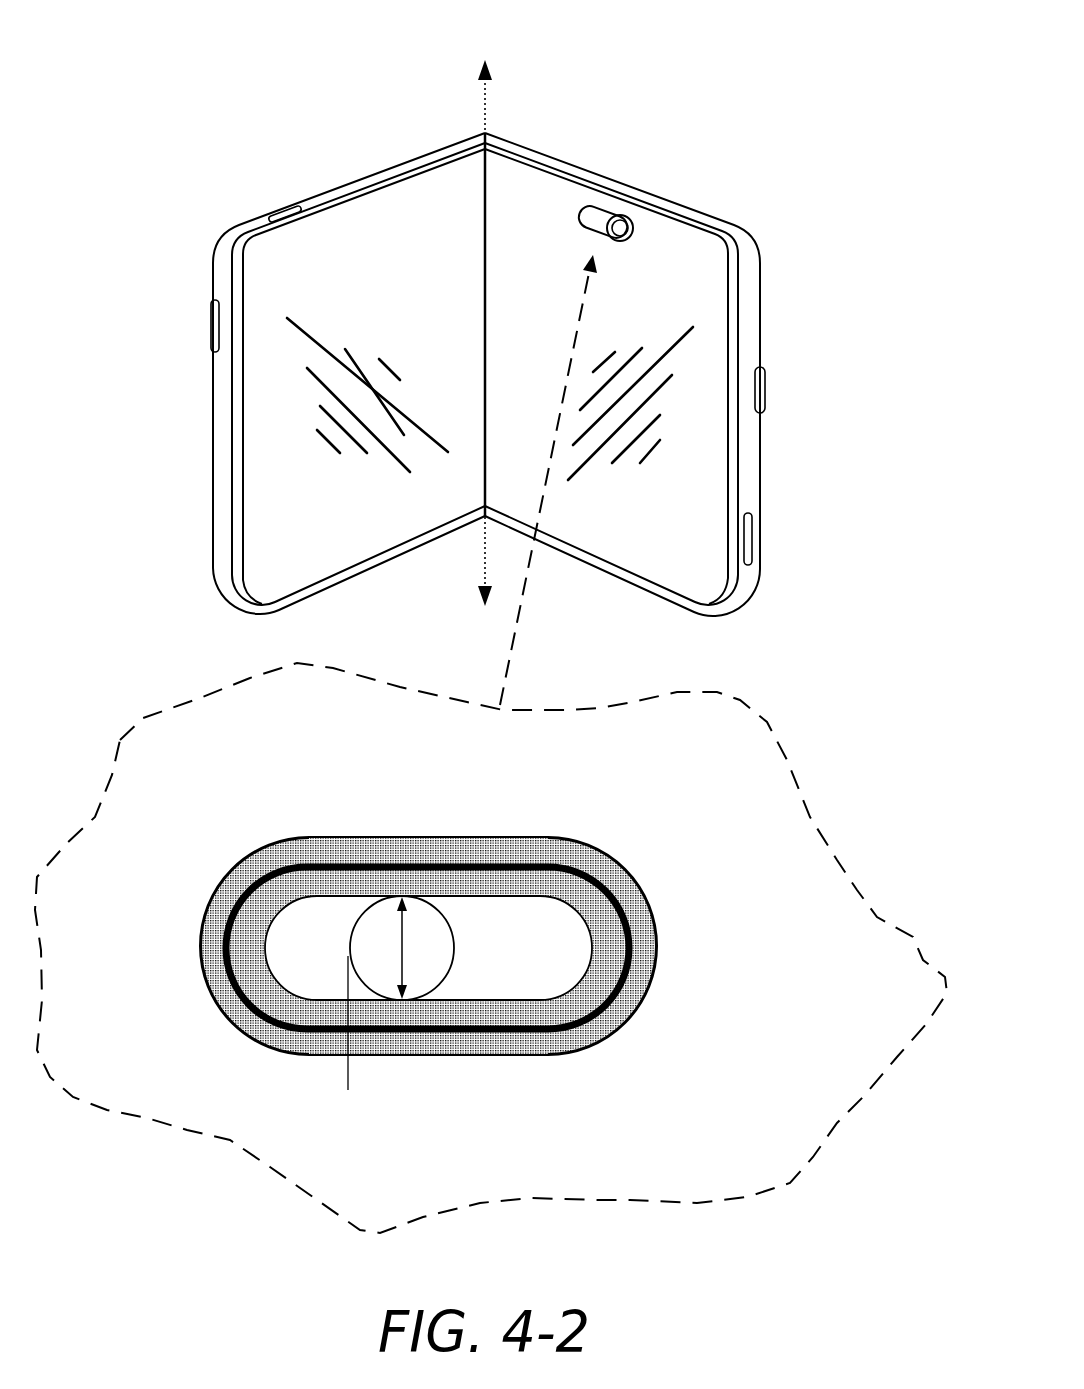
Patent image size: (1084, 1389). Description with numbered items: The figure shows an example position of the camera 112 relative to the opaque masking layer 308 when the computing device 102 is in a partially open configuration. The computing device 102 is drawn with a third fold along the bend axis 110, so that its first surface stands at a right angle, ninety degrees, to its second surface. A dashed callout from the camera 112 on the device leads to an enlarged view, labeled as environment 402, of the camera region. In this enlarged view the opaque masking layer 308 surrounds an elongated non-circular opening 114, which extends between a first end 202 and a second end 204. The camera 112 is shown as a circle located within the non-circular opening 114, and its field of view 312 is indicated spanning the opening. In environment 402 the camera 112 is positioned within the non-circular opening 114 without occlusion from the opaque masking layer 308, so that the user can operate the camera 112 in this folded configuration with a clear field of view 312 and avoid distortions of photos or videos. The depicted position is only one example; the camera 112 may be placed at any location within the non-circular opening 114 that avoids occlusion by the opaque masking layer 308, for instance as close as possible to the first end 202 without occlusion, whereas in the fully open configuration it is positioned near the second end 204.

The environment 402 is at (161, 40).
The computing device 102 is at (212, 522).
The bend axis 110 is at (485, 111).
The camera 112 is at (621, 218).
The non-circular opening 114 is at (603, 236).
The opaque masking layer 308 is at (274, 836).
The field of view 312 is at (402, 948).
The first end 202 is at (178, 977).
The second end 204 is at (679, 997).